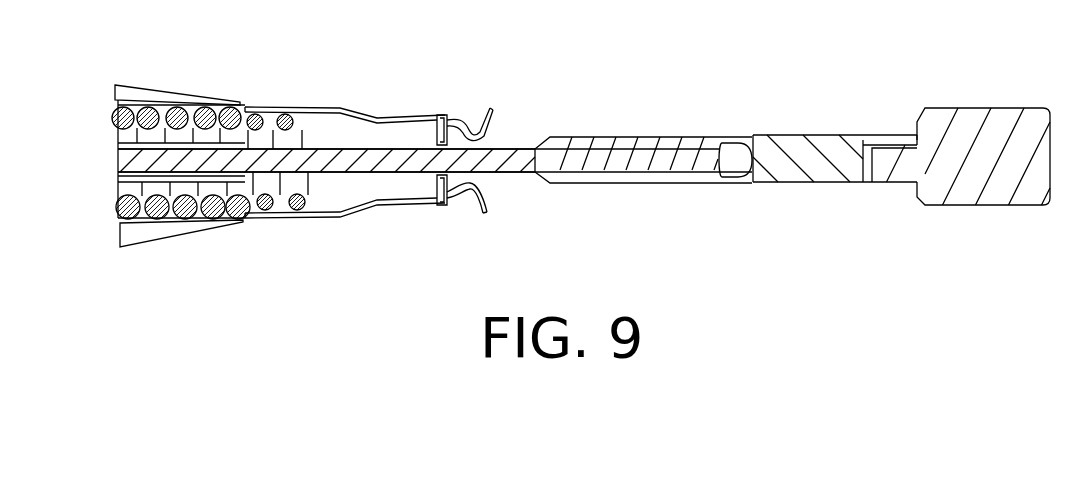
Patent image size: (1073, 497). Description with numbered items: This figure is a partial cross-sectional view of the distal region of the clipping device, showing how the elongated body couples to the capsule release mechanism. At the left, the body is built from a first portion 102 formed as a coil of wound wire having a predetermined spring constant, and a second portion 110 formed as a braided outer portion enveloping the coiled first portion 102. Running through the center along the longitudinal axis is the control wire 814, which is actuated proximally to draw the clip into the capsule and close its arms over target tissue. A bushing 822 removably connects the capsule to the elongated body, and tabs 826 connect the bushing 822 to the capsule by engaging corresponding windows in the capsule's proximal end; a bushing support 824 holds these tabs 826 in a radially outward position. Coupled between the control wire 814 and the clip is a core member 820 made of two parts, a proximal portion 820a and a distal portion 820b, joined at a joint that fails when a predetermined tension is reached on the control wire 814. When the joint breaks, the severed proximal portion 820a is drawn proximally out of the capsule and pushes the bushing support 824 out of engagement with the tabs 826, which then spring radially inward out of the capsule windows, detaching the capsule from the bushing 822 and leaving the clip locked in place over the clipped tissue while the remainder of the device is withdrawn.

The second portion 110 is at (135, 86).
The first portion 102 is at (198, 106).
The bushing 822 is at (332, 108).
The tabs 826 is at (487, 108).
The bushing support 824 is at (450, 206).
The control wire 814 is at (659, 160).
The proximal portion of core member 820a is at (800, 145).
The core member 820 is at (897, 137).
The distal portion of core member 820b is at (1023, 110).